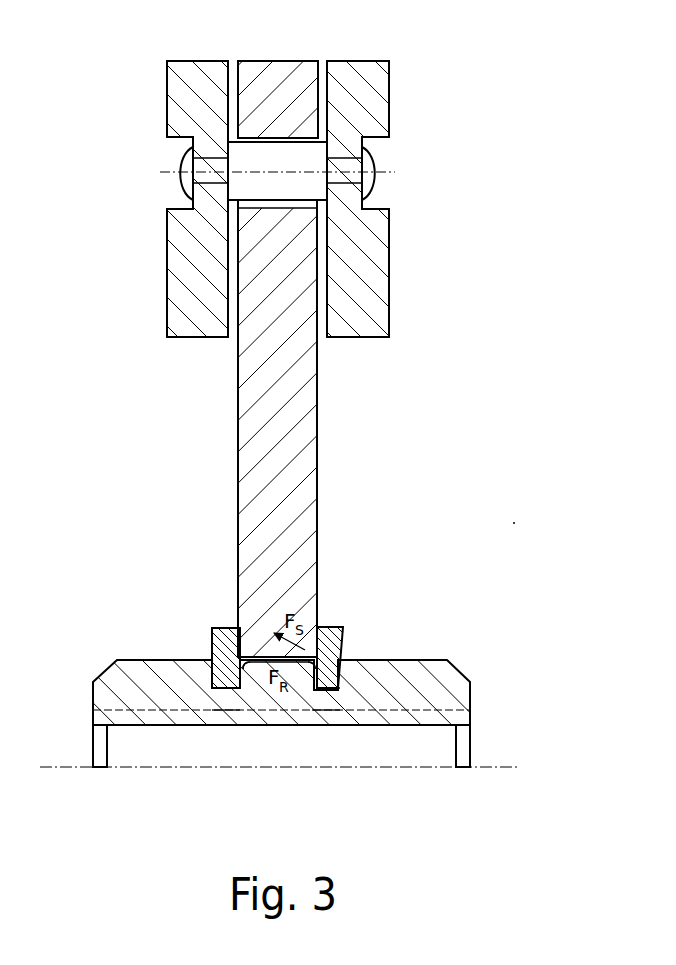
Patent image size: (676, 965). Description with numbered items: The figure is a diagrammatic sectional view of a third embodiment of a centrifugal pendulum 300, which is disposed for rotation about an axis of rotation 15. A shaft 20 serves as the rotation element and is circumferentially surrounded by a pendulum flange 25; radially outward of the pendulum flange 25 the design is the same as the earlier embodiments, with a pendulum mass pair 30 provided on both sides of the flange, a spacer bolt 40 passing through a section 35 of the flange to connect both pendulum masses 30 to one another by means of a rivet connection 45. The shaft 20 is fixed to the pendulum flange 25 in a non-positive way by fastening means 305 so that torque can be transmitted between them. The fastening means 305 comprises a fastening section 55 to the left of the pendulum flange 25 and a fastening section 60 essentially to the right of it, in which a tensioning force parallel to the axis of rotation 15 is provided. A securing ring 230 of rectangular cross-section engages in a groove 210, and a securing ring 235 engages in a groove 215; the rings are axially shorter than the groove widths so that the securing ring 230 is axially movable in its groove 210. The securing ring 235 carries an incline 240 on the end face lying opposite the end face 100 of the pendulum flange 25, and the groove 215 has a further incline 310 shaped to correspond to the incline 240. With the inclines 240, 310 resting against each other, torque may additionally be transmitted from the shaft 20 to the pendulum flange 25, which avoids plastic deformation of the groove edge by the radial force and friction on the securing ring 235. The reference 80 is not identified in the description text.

The axis of rotation 15 is at (520, 767).
The shaft 20 is at (470, 690).
The pendulum flange 25 is at (308, 432).
The pendulum mass pair 30 is at (175, 303).
The section 35 is at (312, 162).
The spacer bolt 40 is at (274, 132).
The rivet connection 45 is at (183, 183).
The fastening section 55 is at (247, 714).
The fastening section 60 is at (340, 714).
The column surface 80 is at (238, 434).
The end face 100 is at (318, 350).
The groove 210 is at (247, 672).
The groove 215 is at (304, 670).
The securing ring 230 is at (212, 627).
The securing ring 235 is at (343, 627).
The incline 240 is at (347, 661).
The centrifugal pendulum 300 is at (514, 523).
The fastening means 305 is at (348, 605).
The further incline 310 is at (345, 672).